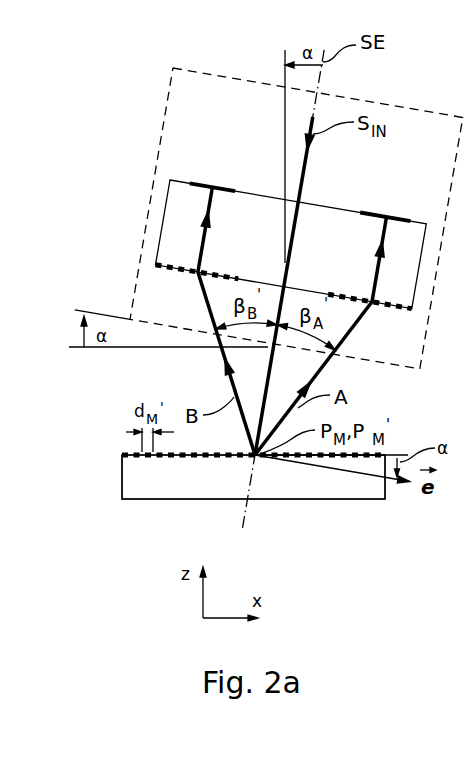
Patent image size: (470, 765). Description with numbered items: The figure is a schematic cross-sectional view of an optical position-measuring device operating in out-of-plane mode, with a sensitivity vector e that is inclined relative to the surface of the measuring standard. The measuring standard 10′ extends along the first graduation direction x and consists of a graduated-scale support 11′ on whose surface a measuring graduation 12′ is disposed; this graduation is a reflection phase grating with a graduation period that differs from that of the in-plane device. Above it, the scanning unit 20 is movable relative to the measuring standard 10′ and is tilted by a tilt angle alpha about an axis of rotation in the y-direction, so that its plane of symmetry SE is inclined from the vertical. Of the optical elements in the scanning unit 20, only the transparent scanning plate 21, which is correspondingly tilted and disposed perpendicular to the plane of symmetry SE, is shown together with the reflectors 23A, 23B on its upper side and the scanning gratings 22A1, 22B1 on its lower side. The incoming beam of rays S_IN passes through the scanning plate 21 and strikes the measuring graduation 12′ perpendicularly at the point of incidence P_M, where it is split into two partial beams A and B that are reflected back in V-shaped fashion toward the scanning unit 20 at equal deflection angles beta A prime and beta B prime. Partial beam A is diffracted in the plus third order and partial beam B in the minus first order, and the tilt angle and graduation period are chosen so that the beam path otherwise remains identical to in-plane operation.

The scanning unit 20 is at (154, 128).
The transparent scanning plate 21 is at (172, 227).
The scanning grating 22B1 is at (165, 270).
The scanning grating 22A1 is at (400, 310).
The reflector 23B is at (216, 186).
The reflector 23A is at (396, 219).
The measuring standard 10′ is at (139, 517).
The graduated-scale support 11′ is at (362, 490).
The measuring graduation 12′ is at (122, 455).